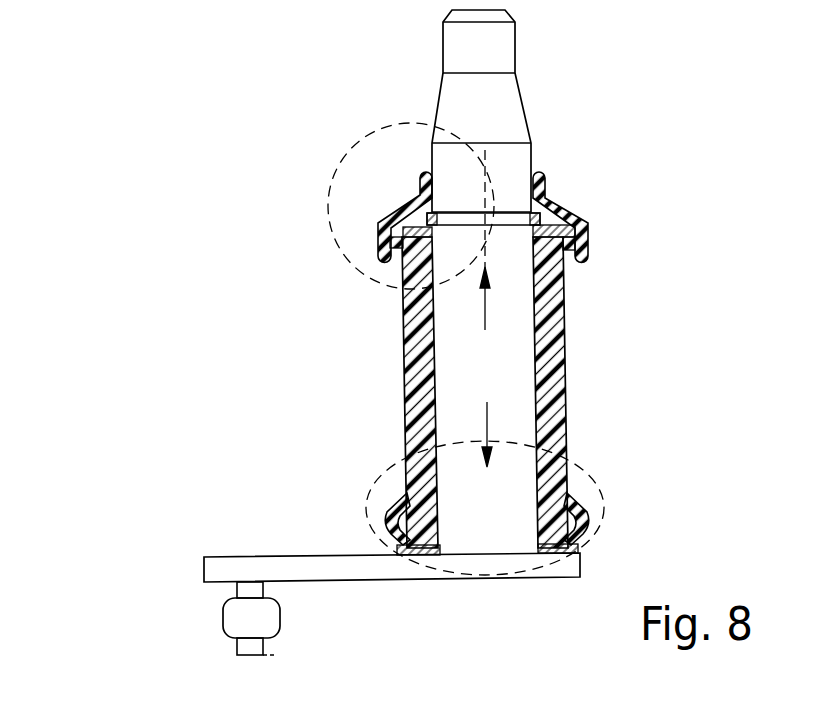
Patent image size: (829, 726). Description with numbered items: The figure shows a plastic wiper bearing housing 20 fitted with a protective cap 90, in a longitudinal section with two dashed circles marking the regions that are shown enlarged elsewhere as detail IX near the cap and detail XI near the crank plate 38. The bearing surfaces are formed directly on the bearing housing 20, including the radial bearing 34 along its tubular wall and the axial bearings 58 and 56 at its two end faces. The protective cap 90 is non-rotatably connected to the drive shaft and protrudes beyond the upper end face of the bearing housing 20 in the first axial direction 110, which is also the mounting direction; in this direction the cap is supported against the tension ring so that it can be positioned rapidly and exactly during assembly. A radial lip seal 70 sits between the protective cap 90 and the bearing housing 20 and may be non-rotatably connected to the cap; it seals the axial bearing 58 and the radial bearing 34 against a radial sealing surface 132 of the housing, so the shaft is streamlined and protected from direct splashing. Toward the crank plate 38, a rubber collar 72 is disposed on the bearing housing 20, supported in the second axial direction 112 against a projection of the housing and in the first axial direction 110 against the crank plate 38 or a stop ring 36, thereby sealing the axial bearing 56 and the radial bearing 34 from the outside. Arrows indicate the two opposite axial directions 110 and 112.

The enlarged detail IX is at (345, 152).
The enlarged detail XI is at (600, 528).
The bearing housing 20 is at (331, 279).
The radial bearing 34 is at (405, 440).
The stop ring 36 is at (567, 213).
The crank plate 38 is at (227, 577).
The axial bearing 56 is at (398, 546).
The axial bearing 58 is at (380, 235).
The radial lip seal 70 is at (590, 227).
The rubber collar 72 is at (585, 507).
The protective cap 90 is at (388, 220).
The first axial direction 110 is at (487, 423).
The second axial direction 112 is at (487, 302).
The radial sealing surface 132 is at (385, 252).